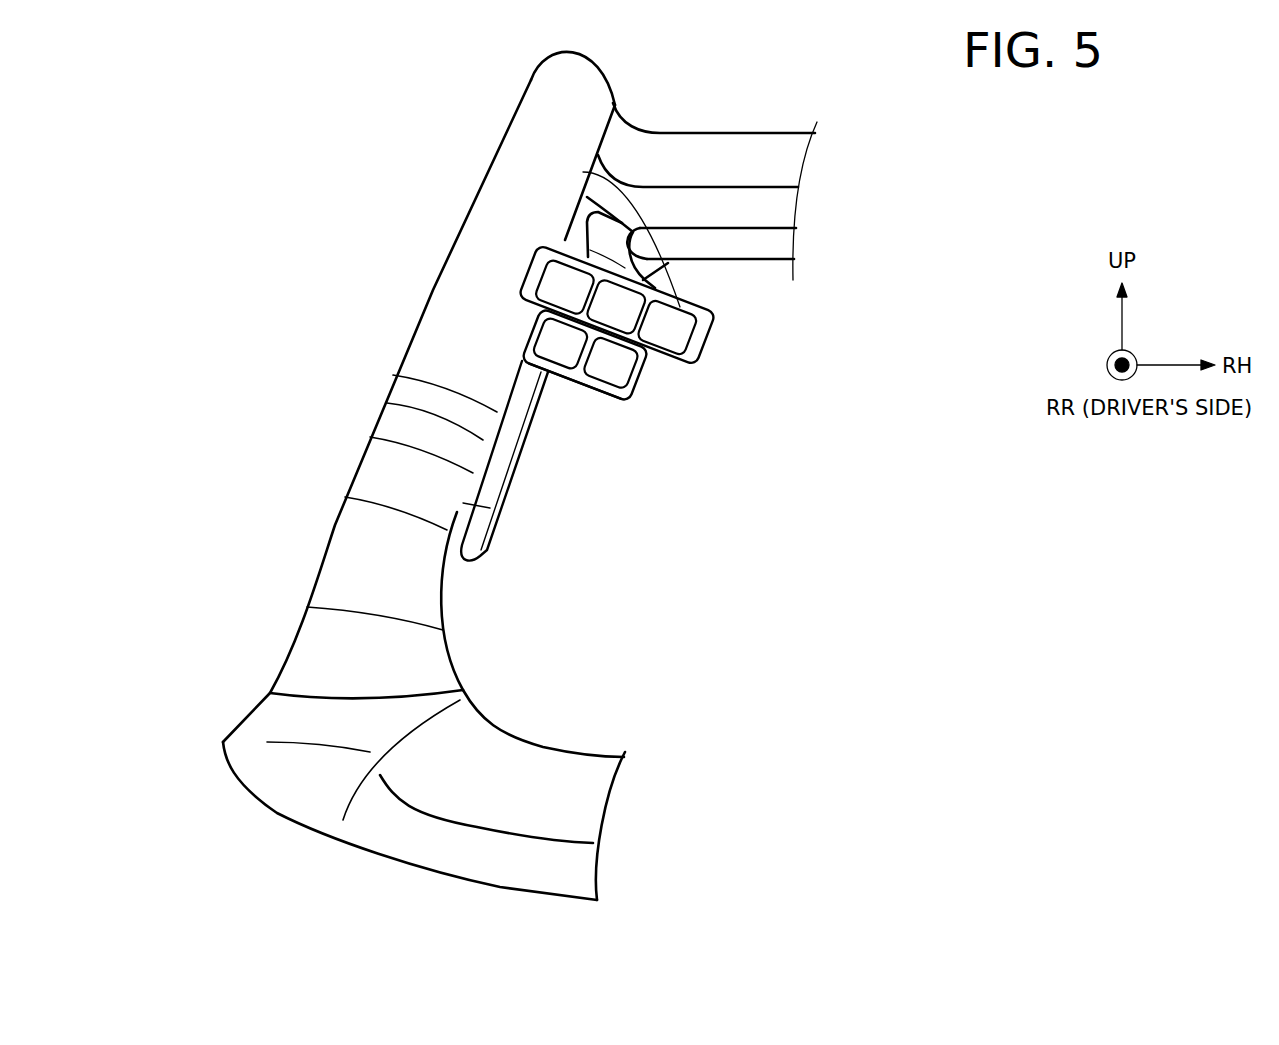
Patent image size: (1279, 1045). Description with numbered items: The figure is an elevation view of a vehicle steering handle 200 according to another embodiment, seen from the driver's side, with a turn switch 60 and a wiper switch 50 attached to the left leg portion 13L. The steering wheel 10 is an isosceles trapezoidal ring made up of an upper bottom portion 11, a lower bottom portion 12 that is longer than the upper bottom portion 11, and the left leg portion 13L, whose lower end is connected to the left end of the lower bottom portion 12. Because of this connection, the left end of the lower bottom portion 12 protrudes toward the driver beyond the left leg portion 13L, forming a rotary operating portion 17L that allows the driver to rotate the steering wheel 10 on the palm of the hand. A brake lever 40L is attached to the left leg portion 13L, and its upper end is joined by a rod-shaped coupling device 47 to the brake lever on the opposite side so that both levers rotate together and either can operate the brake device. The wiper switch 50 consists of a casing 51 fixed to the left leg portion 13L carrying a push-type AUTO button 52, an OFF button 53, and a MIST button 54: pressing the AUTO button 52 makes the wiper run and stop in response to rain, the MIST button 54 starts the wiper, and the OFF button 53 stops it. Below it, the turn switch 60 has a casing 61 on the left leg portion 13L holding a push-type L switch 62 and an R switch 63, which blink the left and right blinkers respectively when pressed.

The vehicle steering handle 200 is at (165, 147).
The steering wheel 10 is at (500, 890).
The upper bottom portion 11 is at (762, 132).
The lower bottom portion 12 is at (608, 800).
The left leg portion 13L is at (523, 95).
The rotary operating portion 17L is at (277, 723).
The brake lever 40L is at (522, 447).
The coupling device 47 is at (783, 220).
The wiper switch 50 is at (595, 333).
The casing 51 is at (697, 357).
The AUTO button 52 is at (543, 278).
The OFF button 53 is at (590, 250).
The MIST button 54 is at (593, 197).
The turn switch 60 is at (535, 405).
The casing 61 is at (637, 388).
The L switch 62 is at (547, 335).
The R switch 63 is at (590, 387).